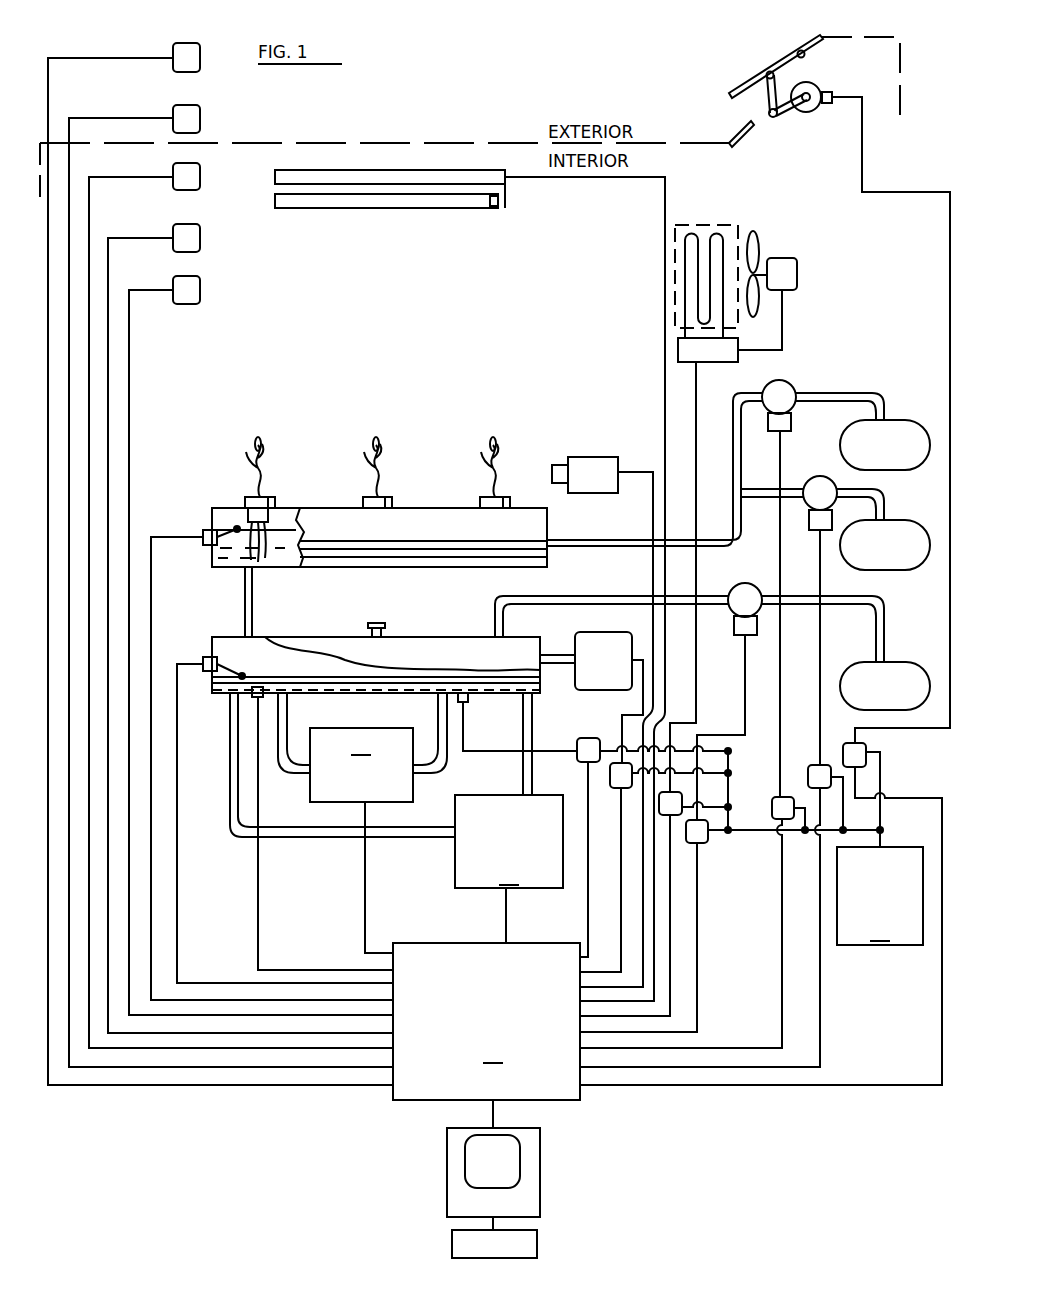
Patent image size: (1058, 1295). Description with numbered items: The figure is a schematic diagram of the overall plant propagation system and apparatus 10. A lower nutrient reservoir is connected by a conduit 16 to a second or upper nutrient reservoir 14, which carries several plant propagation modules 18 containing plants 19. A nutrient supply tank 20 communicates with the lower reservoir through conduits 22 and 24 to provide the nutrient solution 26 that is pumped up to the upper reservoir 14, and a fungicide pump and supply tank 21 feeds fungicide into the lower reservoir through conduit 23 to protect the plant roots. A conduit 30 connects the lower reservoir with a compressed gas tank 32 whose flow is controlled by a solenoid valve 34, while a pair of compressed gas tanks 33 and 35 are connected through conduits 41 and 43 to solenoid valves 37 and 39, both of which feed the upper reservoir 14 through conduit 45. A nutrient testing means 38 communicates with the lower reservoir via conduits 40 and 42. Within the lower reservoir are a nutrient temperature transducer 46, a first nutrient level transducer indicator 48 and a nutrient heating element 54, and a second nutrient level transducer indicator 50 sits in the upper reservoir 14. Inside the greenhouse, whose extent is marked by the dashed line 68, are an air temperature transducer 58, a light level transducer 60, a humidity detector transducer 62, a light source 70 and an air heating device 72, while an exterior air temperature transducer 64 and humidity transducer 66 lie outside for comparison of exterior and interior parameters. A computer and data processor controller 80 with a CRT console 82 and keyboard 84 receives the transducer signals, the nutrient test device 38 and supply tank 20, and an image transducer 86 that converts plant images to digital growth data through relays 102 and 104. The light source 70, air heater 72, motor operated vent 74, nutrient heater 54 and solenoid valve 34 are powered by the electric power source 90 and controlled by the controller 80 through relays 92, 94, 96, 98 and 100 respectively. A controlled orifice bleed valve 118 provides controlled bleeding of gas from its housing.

The plant propagation system and apparatus 10 is at (504, 90).
The second or upper nutrient reservoir 14 is at (395, 570).
The conduit 16 is at (256, 600).
The plant propagation modules 18 is at (274, 497).
The plants 19 is at (250, 465).
The nutrient supply tank 20 is at (509, 869).
The fungicide pump and supply tank 21 is at (608, 692).
The conduit 22 is at (536, 733).
The conduit 23 is at (560, 640).
The conduit 24 is at (330, 843).
The nutrient solution 26 is at (296, 541).
The conduit 30 is at (496, 600).
The compressed gas tank 32 is at (892, 662).
The compressed gas tank 33 is at (892, 520).
The solenoid valve 34 is at (744, 584).
The compressed gas tank 35 is at (892, 420).
The solenoid valve 37 is at (818, 478).
The nutrient testing means 38 is at (361, 840).
The solenoid valve 39 is at (784, 378).
The conduit 40 is at (430, 724).
The conduit 41 is at (770, 511).
The conduit 42 is at (296, 712).
The conduit 43 is at (826, 393).
The conduit 45 is at (614, 532).
The nutrient temperature transducer 46 is at (255, 700).
The first nutrient reservoir level transducer indicator 48 is at (206, 656).
The second nutrient level transducer indicator 50 is at (206, 528).
The nutrient heating element 54 is at (380, 690).
The air temperature transducer 58 is at (200, 288).
The light level transducer 60 is at (200, 236).
The humidity detector transducer 62 is at (200, 175).
The air temperature transducer 64 is at (200, 117).
The humidity transducer 66 is at (200, 56).
The dashed line 68 is at (374, 143).
The light source 70 is at (508, 187).
The air heating device 72 is at (749, 224).
The motor operated vent 74 is at (768, 70).
The computer and data processor controller 80 is at (486, 1035).
The cathode ray screen (CRT) console 82 is at (542, 1170).
The keyboard 84 is at (540, 1248).
The image transducer 86 is at (584, 457).
The electric power source 90 is at (880, 887).
The relay 92 is at (590, 738).
The relay 94 is at (618, 790).
The relay 96 is at (682, 794).
The relay 98 is at (706, 845).
The relay 100 is at (872, 748).
The relay 102 is at (814, 765).
The relay 104 is at (772, 800).
The controlled orifice bleed valve 118 is at (378, 623).